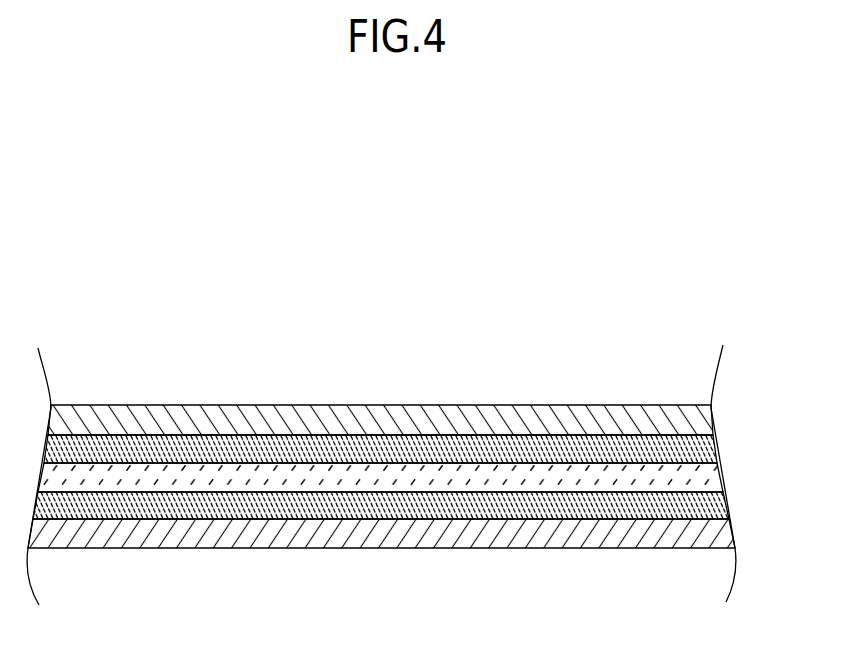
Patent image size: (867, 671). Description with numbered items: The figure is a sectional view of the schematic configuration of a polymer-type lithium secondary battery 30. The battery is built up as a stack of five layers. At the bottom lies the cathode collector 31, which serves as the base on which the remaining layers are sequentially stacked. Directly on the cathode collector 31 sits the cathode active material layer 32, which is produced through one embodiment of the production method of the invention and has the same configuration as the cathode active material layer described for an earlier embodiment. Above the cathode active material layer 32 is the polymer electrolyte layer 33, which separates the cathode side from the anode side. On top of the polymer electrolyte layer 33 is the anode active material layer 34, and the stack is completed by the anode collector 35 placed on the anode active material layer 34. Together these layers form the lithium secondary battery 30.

The lithium secondary battery 30 is at (412, 419).
The cathode collector 31 is at (732, 535).
The cathode active material layer 32 is at (730, 500).
The polymer electrolyte layer 33 is at (718, 472).
The anode active material layer 34 is at (713, 443).
The anode collector 35 is at (710, 416).